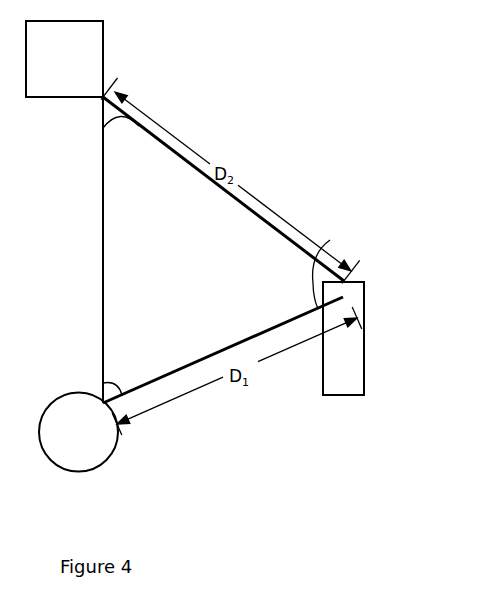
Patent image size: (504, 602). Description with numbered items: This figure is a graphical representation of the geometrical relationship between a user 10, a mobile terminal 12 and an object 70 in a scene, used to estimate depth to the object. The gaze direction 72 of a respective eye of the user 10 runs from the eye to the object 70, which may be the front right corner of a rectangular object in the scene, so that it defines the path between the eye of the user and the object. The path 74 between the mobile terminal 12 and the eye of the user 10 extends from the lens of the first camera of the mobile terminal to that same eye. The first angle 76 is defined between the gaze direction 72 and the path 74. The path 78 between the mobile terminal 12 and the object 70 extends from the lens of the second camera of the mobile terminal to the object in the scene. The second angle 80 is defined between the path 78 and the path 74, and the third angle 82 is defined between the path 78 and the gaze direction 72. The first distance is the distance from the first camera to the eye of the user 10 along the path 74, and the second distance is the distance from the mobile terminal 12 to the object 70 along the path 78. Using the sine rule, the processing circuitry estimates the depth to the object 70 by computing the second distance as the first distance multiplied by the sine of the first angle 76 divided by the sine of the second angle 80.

The user 10 is at (50, 405).
The mobile terminal 12 is at (362, 316).
The object 70 is at (104, 58).
The gaze direction 72 is at (105, 247).
The path between the mobile terminal and the eye of the user 74 is at (218, 352).
The first angle 76 is at (122, 395).
The path between the mobile terminal and the object 78 is at (230, 196).
The second angle 80 is at (330, 240).
The third angle 82 is at (139, 126).